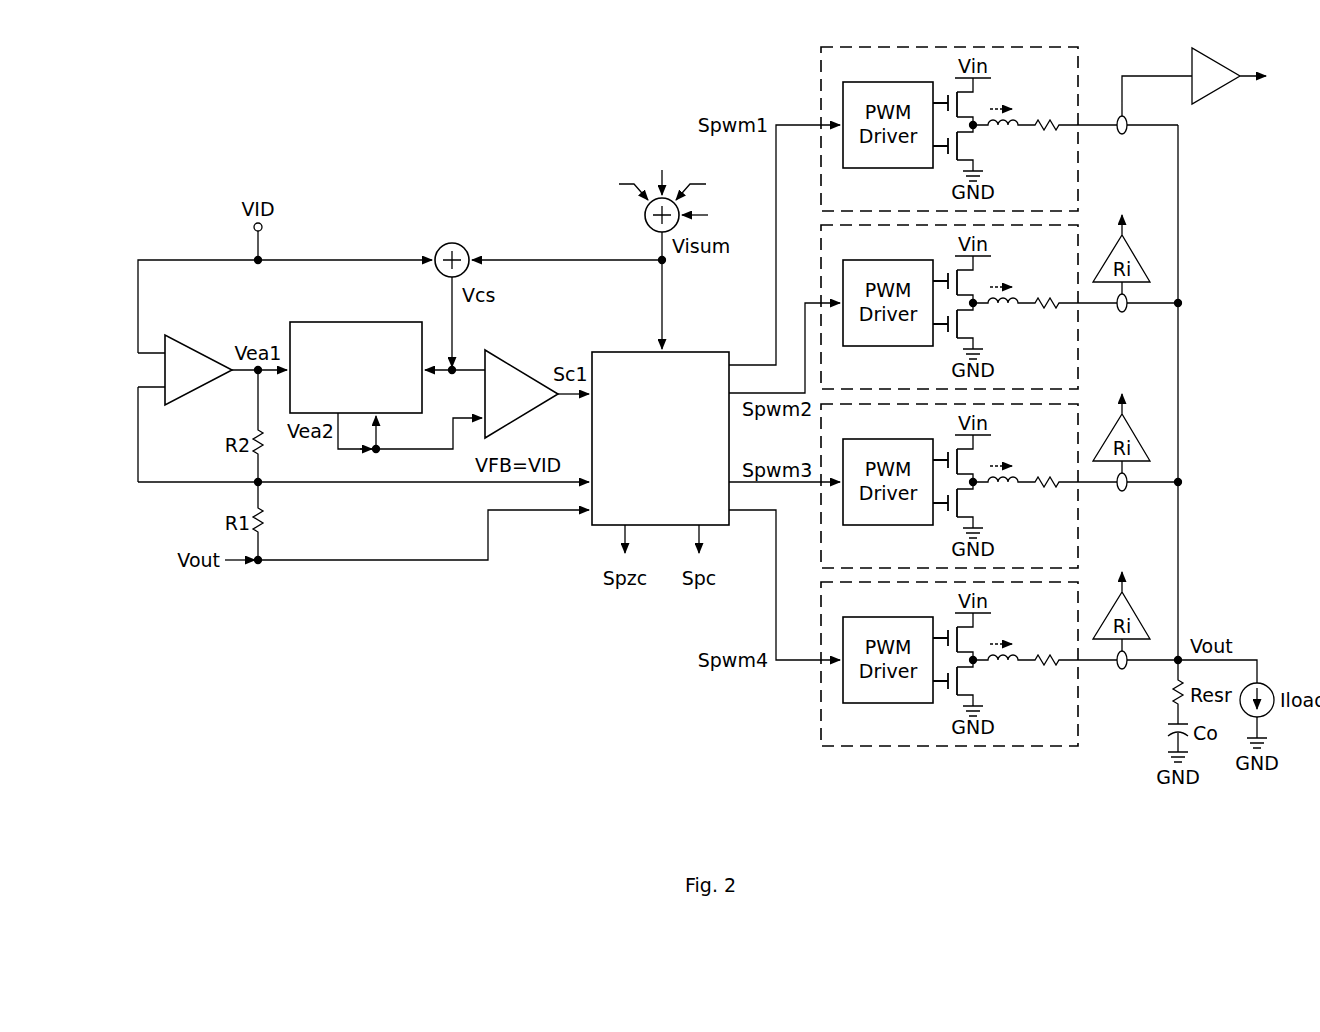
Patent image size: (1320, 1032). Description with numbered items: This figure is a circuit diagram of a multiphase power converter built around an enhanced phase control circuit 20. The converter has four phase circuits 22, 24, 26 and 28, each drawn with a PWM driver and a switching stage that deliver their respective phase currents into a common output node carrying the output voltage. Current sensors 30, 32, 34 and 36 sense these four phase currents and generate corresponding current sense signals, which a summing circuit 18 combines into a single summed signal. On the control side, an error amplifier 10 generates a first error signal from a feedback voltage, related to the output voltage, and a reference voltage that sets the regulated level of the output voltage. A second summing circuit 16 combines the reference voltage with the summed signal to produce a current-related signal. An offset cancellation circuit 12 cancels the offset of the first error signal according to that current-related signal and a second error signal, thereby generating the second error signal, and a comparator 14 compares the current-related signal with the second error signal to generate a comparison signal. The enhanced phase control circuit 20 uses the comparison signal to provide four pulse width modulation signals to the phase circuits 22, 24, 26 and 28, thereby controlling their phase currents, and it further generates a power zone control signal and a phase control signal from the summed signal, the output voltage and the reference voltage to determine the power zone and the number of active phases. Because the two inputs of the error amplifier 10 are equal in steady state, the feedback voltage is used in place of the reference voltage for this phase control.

The error amplifier 10 is at (202, 347).
The offset cancellation circuit 12 is at (356, 322).
The comparator 14 is at (516, 365).
The summing circuit 16 is at (452, 240).
The summing circuit 18 is at (645, 215).
The enhanced phase control circuit 20 is at (592, 437).
The phase circuit 22 is at (821, 90).
The phase circuit 24 is at (1080, 322).
The phase circuit 26 is at (1080, 501).
The phase circuit 28 is at (821, 708).
The current sensor 30 is at (1222, 92).
The current sensor 32 is at (1136, 258).
The current sensor 34 is at (1136, 437).
The current sensor 36 is at (1136, 615).